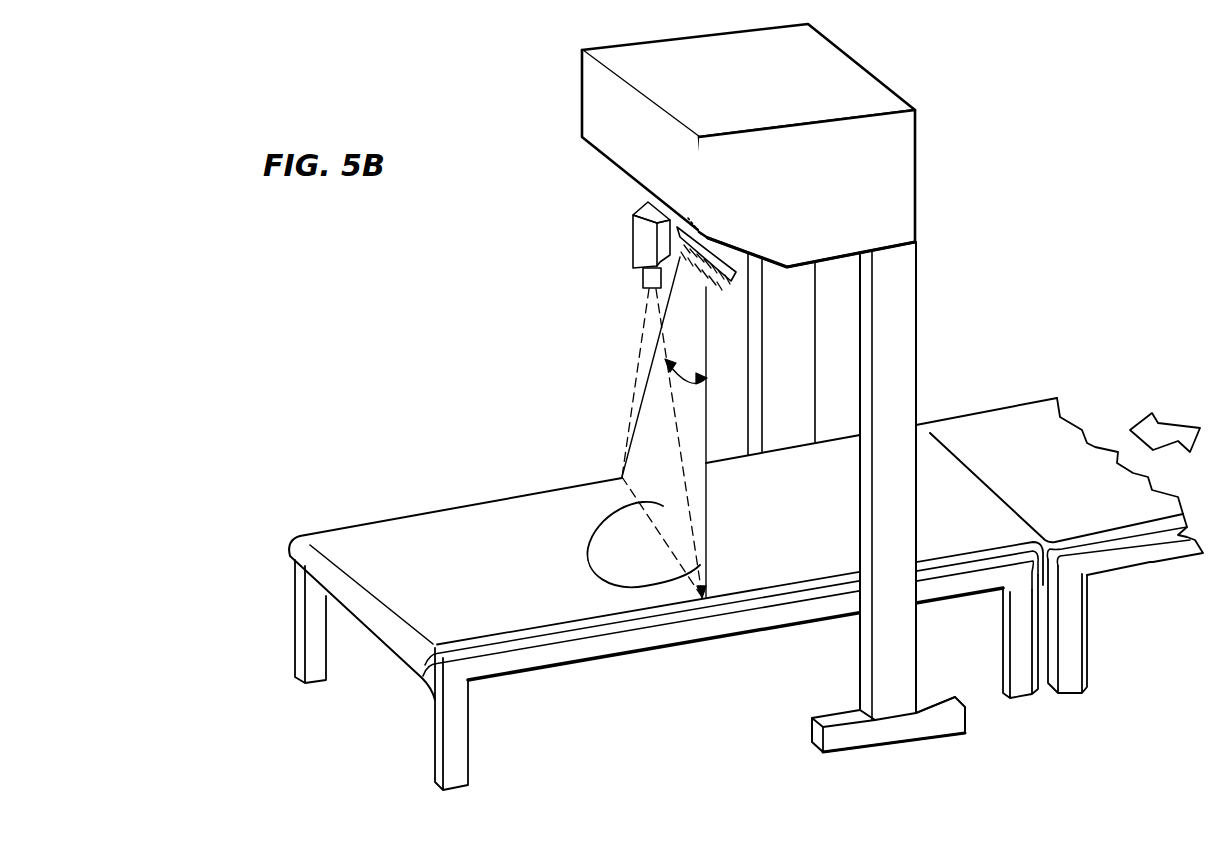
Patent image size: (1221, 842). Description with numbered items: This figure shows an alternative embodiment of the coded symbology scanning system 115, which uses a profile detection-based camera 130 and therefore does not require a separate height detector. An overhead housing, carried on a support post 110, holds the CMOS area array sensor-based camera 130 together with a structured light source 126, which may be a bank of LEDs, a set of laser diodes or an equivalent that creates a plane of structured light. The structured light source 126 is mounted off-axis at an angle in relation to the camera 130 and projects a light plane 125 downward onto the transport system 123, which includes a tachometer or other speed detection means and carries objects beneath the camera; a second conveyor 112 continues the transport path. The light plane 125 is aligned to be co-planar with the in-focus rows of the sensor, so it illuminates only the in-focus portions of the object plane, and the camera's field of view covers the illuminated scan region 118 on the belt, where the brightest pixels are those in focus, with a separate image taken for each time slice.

The system 115 is at (900, 79).
The support post 110 is at (920, 305).
The camera 130 is at (633, 243).
The structured light source 126 is at (737, 290).
The light plane 125 is at (707, 483).
The scan region 118 is at (613, 535).
The transport system 123 is at (584, 607).
The second conveyor belt 112 is at (1110, 563).